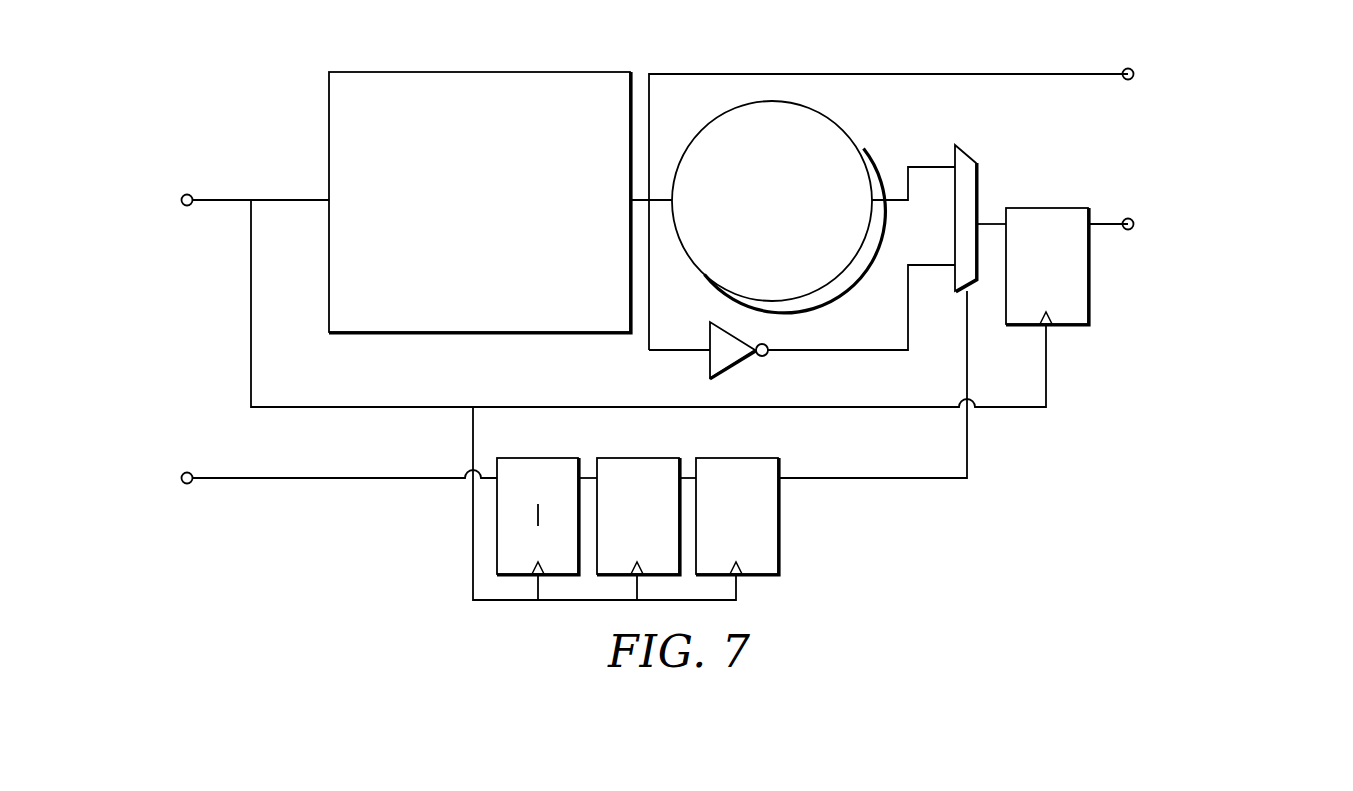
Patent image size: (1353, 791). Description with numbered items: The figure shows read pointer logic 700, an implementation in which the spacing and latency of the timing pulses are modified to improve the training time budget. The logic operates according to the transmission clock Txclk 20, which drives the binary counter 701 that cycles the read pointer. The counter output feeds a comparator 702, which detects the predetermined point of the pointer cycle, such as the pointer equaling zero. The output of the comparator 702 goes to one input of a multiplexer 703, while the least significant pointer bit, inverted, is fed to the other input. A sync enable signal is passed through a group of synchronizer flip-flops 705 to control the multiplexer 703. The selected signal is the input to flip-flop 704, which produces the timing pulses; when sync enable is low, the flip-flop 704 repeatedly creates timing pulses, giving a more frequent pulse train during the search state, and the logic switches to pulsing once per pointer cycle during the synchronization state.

The read pointer logic 700 is at (184, 88).
The transmission clock (Txclk) 20 is at (282, 200).
The binary counter 701 is at (510, 71).
The comparator 702 is at (853, 140).
The multiplexer 703 is at (978, 169).
The flip-flop 704 is at (1032, 206).
The synchronizer flip-flops 705 is at (834, 522).